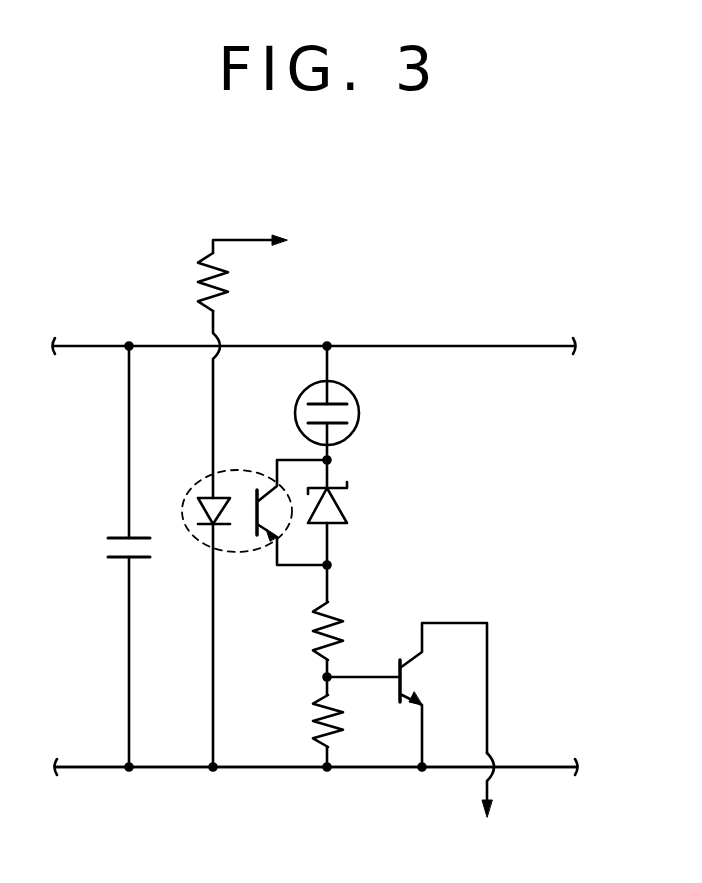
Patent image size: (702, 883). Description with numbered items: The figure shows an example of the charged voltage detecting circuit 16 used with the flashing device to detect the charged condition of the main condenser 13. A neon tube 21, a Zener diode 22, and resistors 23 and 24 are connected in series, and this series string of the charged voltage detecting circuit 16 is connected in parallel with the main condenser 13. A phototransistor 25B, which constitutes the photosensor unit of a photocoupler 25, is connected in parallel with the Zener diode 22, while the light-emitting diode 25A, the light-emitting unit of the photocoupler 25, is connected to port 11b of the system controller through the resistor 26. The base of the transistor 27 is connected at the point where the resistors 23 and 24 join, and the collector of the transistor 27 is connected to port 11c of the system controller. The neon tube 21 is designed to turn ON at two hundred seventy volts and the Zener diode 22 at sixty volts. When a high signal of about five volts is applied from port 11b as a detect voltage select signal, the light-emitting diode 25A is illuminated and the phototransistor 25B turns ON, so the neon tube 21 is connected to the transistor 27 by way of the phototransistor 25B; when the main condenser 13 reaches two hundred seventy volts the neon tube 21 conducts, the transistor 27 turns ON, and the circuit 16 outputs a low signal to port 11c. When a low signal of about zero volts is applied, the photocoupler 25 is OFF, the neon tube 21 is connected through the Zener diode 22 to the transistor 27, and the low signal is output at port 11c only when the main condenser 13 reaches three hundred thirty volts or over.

The port 11b is at (277, 241).
The port 11c is at (493, 803).
The main condenser 13 is at (124, 536).
The charged voltage detecting circuit 16 is at (213, 797).
The neon tube 21 is at (358, 412).
The Zener diode 22 is at (347, 511).
The resistor 23 is at (312, 612).
The resistor 24 is at (312, 712).
The photocoupler 25 is at (193, 484).
The light-emitting diode 25A is at (203, 530).
The phototransistor 25B is at (271, 480).
The resistor 26 is at (198, 289).
The transistor 27 is at (413, 658).